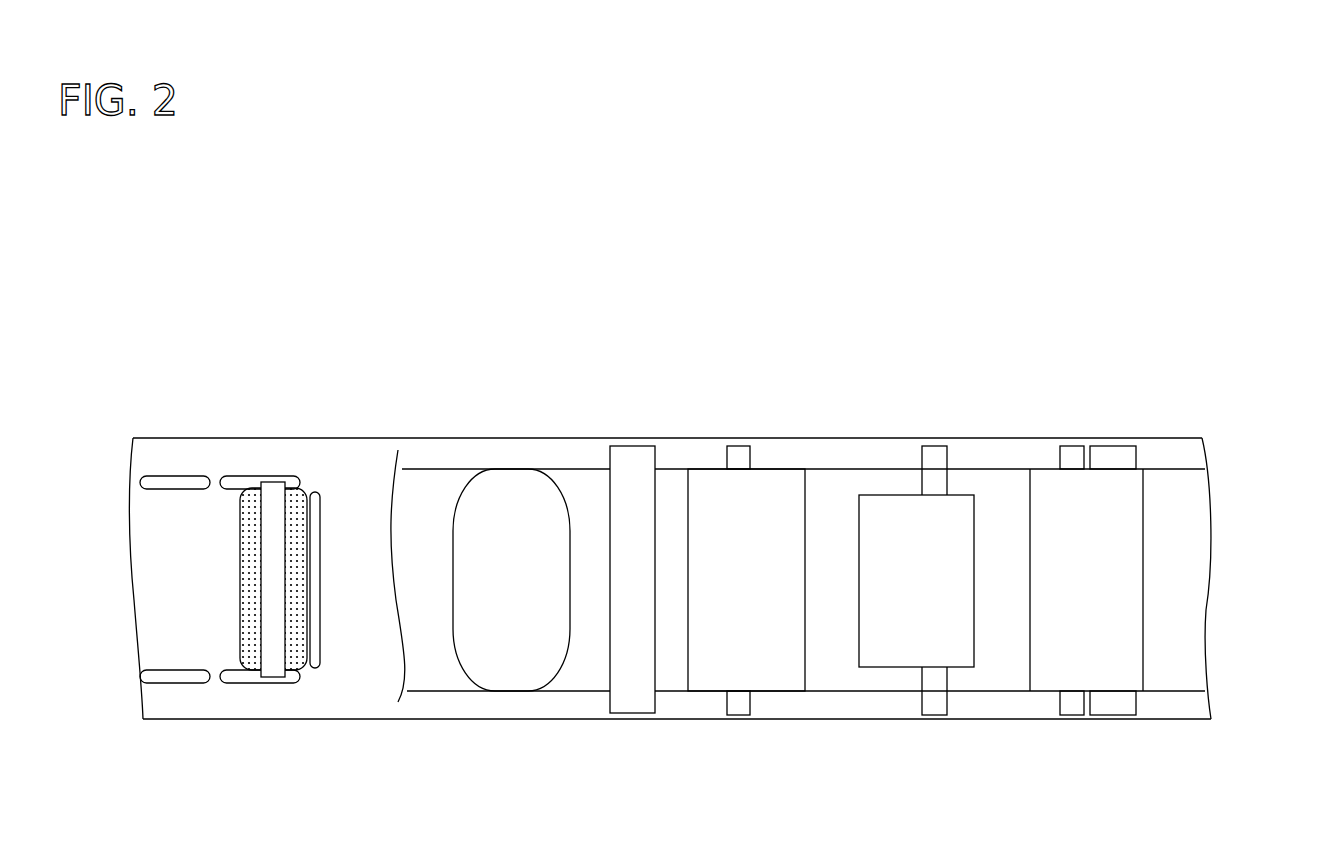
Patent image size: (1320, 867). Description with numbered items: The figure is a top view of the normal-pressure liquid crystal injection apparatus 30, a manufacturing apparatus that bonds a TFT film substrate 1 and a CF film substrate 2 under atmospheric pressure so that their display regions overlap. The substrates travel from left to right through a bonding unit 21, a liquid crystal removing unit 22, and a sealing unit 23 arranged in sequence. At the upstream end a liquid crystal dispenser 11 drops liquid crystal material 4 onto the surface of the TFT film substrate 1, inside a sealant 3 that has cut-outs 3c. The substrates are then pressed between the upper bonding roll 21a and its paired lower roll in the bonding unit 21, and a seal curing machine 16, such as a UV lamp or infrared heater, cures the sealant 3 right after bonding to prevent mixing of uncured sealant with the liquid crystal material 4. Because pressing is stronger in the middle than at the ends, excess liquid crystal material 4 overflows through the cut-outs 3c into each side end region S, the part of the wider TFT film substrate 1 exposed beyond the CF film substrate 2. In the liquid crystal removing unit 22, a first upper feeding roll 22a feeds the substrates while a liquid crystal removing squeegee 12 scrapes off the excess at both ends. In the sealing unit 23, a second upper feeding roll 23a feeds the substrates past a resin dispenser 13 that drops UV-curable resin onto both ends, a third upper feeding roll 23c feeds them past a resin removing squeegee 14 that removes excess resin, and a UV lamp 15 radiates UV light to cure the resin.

The TFT film substrate 1 is at (1258, 440).
The CF film substrate 2 is at (1218, 470).
The sealant 3 is at (250, 487).
The cut-outs 3c is at (213, 678).
The liquid crystal material 4 is at (250, 586).
The liquid crystal dispenser 11 is at (273, 540).
The liquid crystal removing squeegee 12 is at (740, 447).
The resin dispenser 13 is at (934, 447).
The resin removing squeegee 14 is at (1072, 447).
The UV lamp 15 is at (1120, 447).
The seal curing machine 16 is at (632, 710).
The bonding unit 21 is at (467, 360).
The upper bonding roll 21a is at (510, 490).
The liquid crystal removing unit 22 is at (687, 360).
The first upper feeding roll 22a is at (707, 487).
The sealing unit 23 is at (857, 362).
The second upper feeding roll 23a is at (880, 510).
The third upper feeding roll 23c is at (1050, 480).
The normal-pressure liquid crystal injection apparatus 30 is at (254, 299).
The side end region S is at (1177, 447).